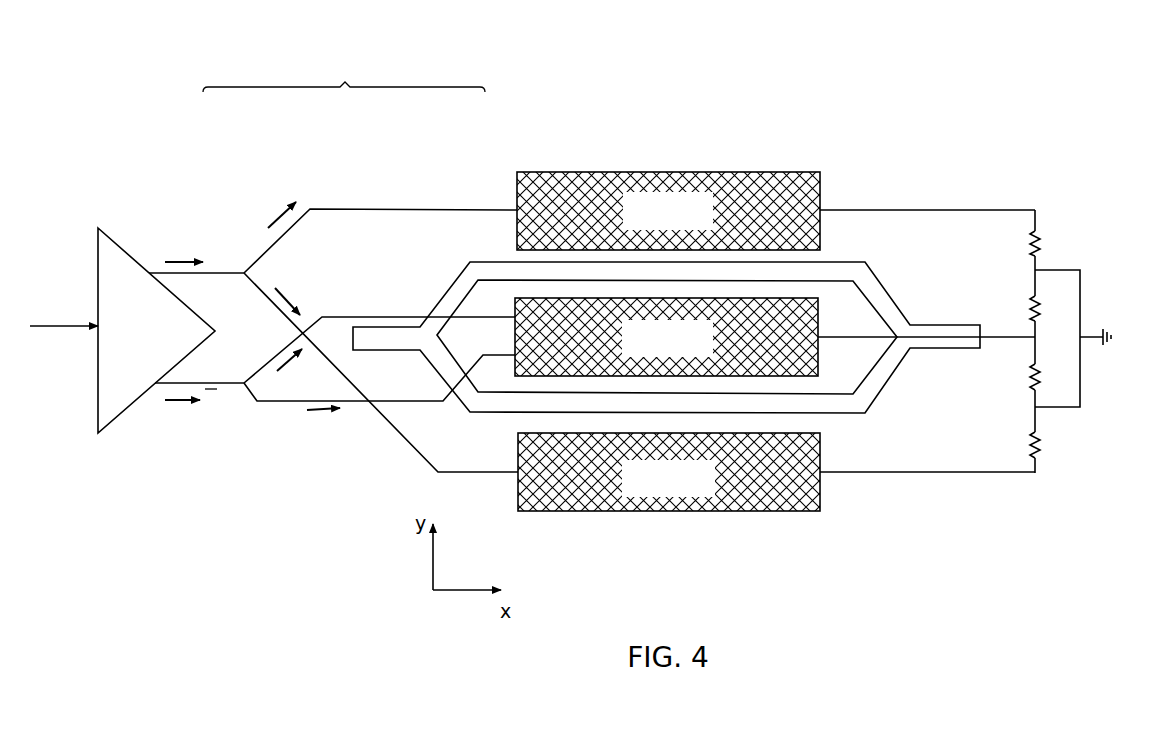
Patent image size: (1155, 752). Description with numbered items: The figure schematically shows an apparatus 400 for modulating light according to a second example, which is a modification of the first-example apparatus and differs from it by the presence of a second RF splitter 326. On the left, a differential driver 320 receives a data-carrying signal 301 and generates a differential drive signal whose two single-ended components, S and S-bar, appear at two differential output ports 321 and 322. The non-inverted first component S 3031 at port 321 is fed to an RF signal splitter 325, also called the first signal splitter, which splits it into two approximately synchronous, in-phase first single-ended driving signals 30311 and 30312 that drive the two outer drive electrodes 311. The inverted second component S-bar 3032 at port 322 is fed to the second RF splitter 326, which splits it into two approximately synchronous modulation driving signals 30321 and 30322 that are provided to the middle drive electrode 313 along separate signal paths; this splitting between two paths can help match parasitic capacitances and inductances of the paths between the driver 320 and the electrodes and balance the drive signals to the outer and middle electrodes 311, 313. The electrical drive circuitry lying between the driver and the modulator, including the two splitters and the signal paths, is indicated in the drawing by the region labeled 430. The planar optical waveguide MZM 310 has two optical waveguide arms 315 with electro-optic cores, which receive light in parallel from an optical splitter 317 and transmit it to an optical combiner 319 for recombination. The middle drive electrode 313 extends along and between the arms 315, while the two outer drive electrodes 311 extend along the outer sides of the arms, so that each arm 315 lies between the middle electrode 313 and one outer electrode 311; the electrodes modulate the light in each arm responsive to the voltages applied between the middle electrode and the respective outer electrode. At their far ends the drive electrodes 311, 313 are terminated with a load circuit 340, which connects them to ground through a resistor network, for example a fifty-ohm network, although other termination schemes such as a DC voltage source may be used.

The apparatus for modulating light 400 is at (648, 13).
The input waveguide section 430 is at (344, 74).
The planar optical waveguide MZM 310 is at (728, 104).
The load circuit 340 is at (1013, 166).
The data-carrying signal 301 is at (53, 325).
The differential driver 320 is at (156, 330).
The first differential output port 321 is at (153, 272).
The second differential output port 322 is at (155, 386).
The RF signal splitter 325 is at (241, 268).
The second RF splitter 326 is at (245, 389).
The first single-ended component S 3031 is at (182, 266).
The first single-ended driving signal 30311 is at (272, 225).
The first single-ended driving signal 30312 is at (292, 301).
The second single-ended driving signal 3032 is at (175, 403).
The modulation driving signal 30321 is at (281, 372).
The modulation driving signal 30322 is at (310, 415).
The outer drive electrodes 311 is at (776, 341).
The middle drive electrode 313 is at (666, 337).
The optical waveguide arms 315 is at (488, 261).
The optical splitter 317 is at (430, 312).
The optical combiner 319 is at (913, 320).